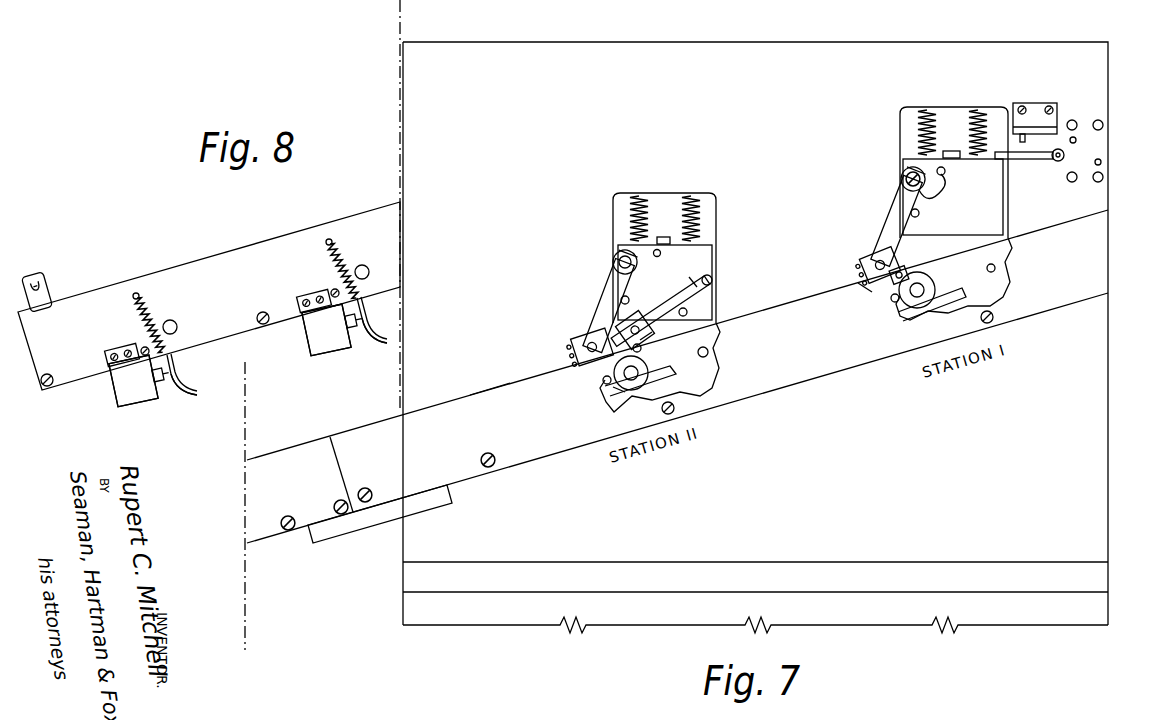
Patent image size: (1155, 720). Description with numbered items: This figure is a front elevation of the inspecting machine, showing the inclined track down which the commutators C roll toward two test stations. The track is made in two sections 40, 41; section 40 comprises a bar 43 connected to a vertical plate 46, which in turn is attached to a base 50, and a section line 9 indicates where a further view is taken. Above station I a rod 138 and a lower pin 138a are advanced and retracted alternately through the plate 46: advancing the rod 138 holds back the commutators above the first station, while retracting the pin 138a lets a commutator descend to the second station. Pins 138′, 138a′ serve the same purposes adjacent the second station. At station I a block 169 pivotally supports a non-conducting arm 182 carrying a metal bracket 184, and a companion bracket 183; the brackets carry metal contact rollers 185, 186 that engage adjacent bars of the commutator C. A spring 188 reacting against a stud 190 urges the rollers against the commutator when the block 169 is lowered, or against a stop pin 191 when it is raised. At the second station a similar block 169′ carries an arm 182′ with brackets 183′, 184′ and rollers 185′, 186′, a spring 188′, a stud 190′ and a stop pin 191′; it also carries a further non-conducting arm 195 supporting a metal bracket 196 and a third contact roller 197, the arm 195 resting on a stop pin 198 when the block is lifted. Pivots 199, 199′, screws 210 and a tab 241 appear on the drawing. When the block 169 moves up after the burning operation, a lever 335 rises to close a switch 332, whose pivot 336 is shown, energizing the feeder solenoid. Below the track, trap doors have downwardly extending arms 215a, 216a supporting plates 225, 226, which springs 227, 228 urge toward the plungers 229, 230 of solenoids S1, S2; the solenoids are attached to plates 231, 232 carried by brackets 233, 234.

In FIG. 8, the section line 9 is at (248, 51).
In FIG. 7, the track section 40 is at (547, 462).
In FIG. 8, the track section 41 is at (245, 333).
In FIG. 7, the track section 41 is at (290, 538).
In FIG. 7, the bar 43 is at (490, 391).
In FIG. 7, the vertical plate 46 is at (1109, 404).
In FIG. 7, the base 50 is at (403, 580).
In FIG. 7, the rod 138 is at (990, 263).
In FIG. 7, the pin 138a is at (892, 302).
In FIG. 7, the pin 138′ is at (710, 352).
In FIG. 7, the pin 138a′ is at (602, 384).
In FIG. 7, the block 169 is at (1009, 178).
In FIG. 7, the block 169′ is at (716, 247).
In FIG. 7, the non-conducting arm 182 is at (897, 202).
In FIG. 7, the non-conducting arm 182′ is at (597, 304).
In FIG. 7, the metal bracket 183 is at (895, 266).
In FIG. 7, the metal bracket 183′ is at (648, 307).
In FIG. 7, the metal bracket 184 is at (856, 272).
In FIG. 7, the metal bracket 184′ is at (588, 366).
In FIG. 7, the metal contact roller 185 is at (925, 272).
In FIG. 7, the contact roller 185′ is at (631, 373).
In FIG. 7, the metal contact roller 186 is at (862, 290).
In FIG. 7, the contact roller 186′ is at (616, 393).
In FIG. 7, the spring 188 is at (935, 190).
In FIG. 7, the spring 188′ is at (618, 260).
In FIG. 7, the stud 190 is at (945, 170).
In FIG. 7, the stud 190′ is at (661, 253).
In FIG. 7, the stop pin 191 is at (927, 208).
In FIG. 7, the stop pin 191′ is at (628, 297).
In FIG. 7, the non-conducting arm 195 is at (679, 290).
In FIG. 7, the metal bracket 196 is at (652, 332).
In FIG. 7, the contact roller 197 is at (642, 348).
In FIG. 7, the stop pin 198 is at (687, 311).
In FIG. 7, the pivot 199 is at (713, 276).
In FIG. 7, the tab 199′ is at (697, 271).
In FIG. 7, the screws 210 is at (373, 492).
In FIG. 8, the arm 215a is at (377, 325).
In FIG. 8, the arm 216a is at (190, 386).
In FIG. 8, the plate 225 is at (372, 340).
In FIG. 8, the plate 226 is at (190, 395).
In FIG. 8, the spring 227 is at (346, 262).
In FIG. 8, the spring 228 is at (150, 320).
In FIG. 8, the plunger 229 is at (356, 338).
In FIG. 8, the plunger 230 is at (163, 390).
In FIG. 8, the plate 231 is at (300, 322).
In FIG. 8, the plate 232 is at (112, 377).
In FIG. 8, the bracket 233 is at (299, 297).
In FIG. 8, the bracket 234 is at (108, 362).
In FIG. 8, the tab 241 is at (50, 283).
In FIG. 7, the switch 332 is at (1057, 118).
In FIG. 7, the lever 335 is at (1052, 163).
In FIG. 7, the pivot 336 is at (1066, 155).
In FIG. 7, the commutator C is at (660, 348).
In FIG. 8, the solenoid S1 is at (328, 352).
In FIG. 8, the solenoid S2 is at (137, 406).